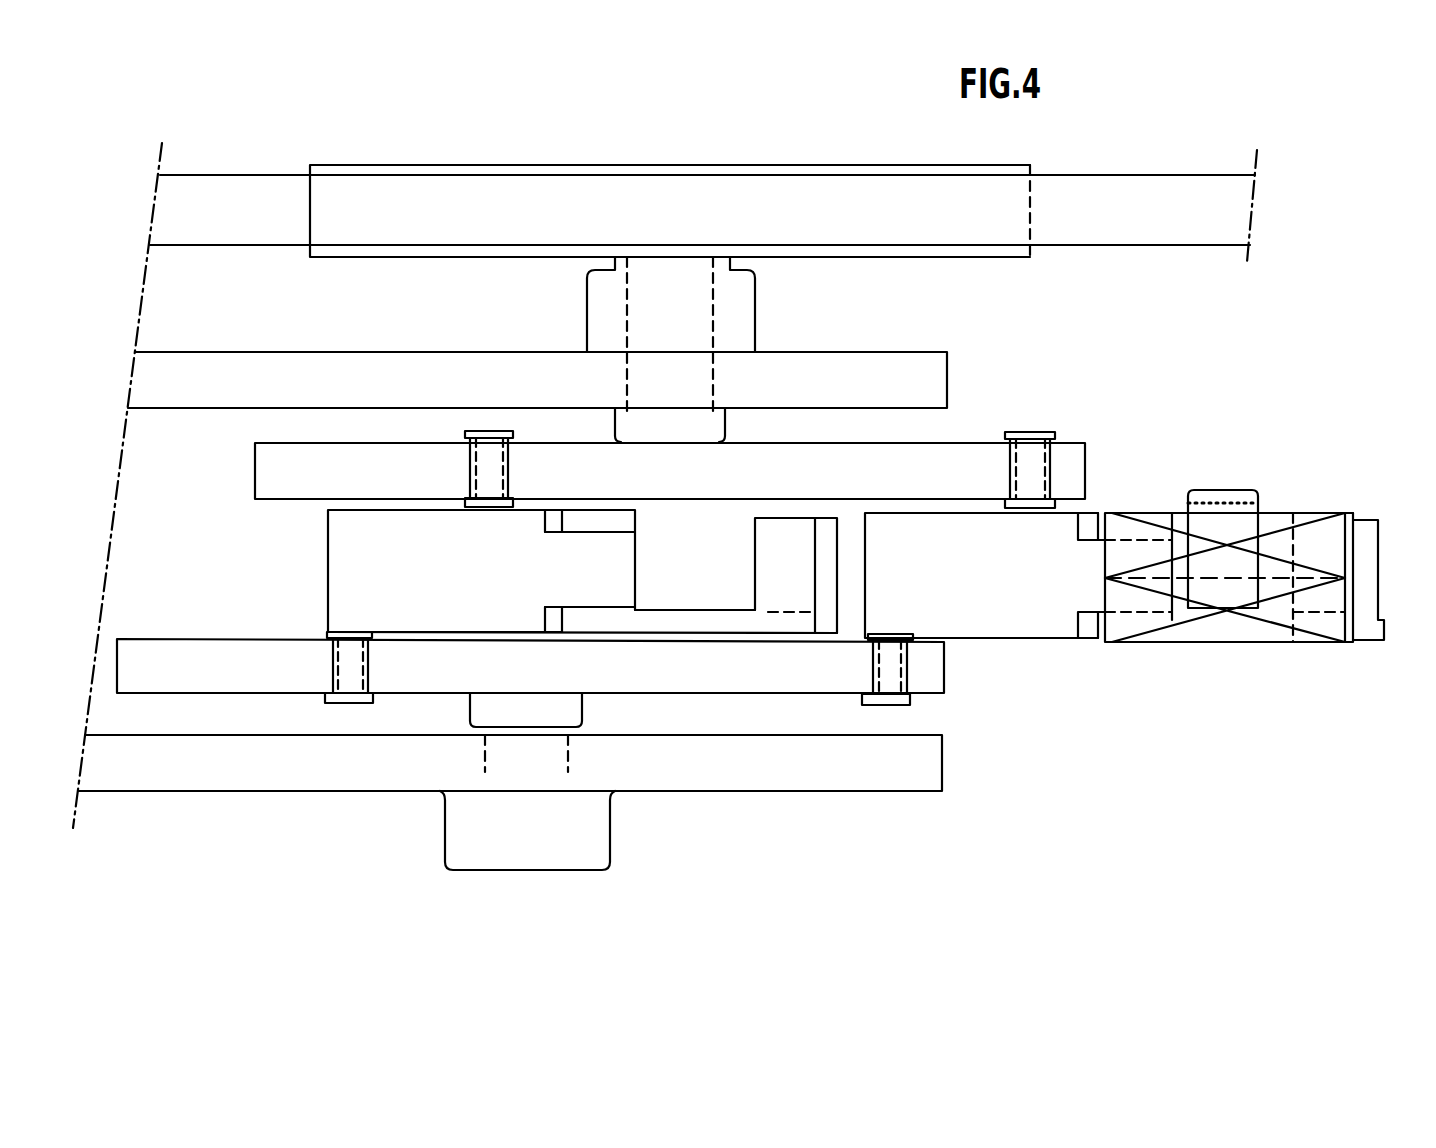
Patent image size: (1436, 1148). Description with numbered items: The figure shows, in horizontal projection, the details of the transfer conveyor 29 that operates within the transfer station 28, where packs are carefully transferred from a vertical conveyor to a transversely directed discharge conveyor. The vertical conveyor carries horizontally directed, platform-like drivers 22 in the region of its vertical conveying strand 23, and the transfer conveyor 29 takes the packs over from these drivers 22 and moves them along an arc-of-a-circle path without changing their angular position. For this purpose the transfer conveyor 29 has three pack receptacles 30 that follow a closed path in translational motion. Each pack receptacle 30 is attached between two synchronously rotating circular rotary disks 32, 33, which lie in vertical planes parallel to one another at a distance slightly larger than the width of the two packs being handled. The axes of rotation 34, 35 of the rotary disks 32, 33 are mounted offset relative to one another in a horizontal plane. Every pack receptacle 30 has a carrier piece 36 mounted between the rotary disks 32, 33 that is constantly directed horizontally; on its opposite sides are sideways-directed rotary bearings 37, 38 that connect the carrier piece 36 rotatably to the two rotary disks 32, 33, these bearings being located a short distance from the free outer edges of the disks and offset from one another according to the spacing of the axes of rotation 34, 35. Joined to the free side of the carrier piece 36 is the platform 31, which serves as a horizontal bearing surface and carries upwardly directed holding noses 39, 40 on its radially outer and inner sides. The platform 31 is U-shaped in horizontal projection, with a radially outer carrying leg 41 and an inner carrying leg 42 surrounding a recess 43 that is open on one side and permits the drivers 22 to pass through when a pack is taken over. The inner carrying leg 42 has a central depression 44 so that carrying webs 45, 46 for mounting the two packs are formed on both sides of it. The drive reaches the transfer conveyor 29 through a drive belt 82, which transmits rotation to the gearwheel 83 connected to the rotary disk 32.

The driver 22 is at (1250, 567).
The vertical conveying strand 23 is at (1237, 493).
The transfer station 28 is at (880, 852).
The transfer conveyor 29 is at (824, 316).
The pack receptacle 30 is at (306, 607).
The platform 31 is at (790, 598).
The rotary disk 32 is at (270, 462).
The rotary disk 33 is at (177, 678).
The axis of rotation 34 is at (663, 303).
The axis of rotation 35 is at (523, 745).
The carrier piece 36 is at (343, 545).
The rotary bearing 37 is at (358, 672).
The rotary bearing 38 is at (487, 463).
The holding nose 39 is at (553, 512).
The holding nose 40 is at (830, 537).
The outer carrying leg 41 is at (938, 393).
The inner carrying leg 42 is at (615, 570).
The recess 43 is at (707, 591).
The central depression 44 is at (563, 575).
The carrying web 45 is at (620, 522).
The carrying web 46 is at (617, 617).
The drive belt 82 is at (228, 197).
The gearwheel 83 is at (773, 172).